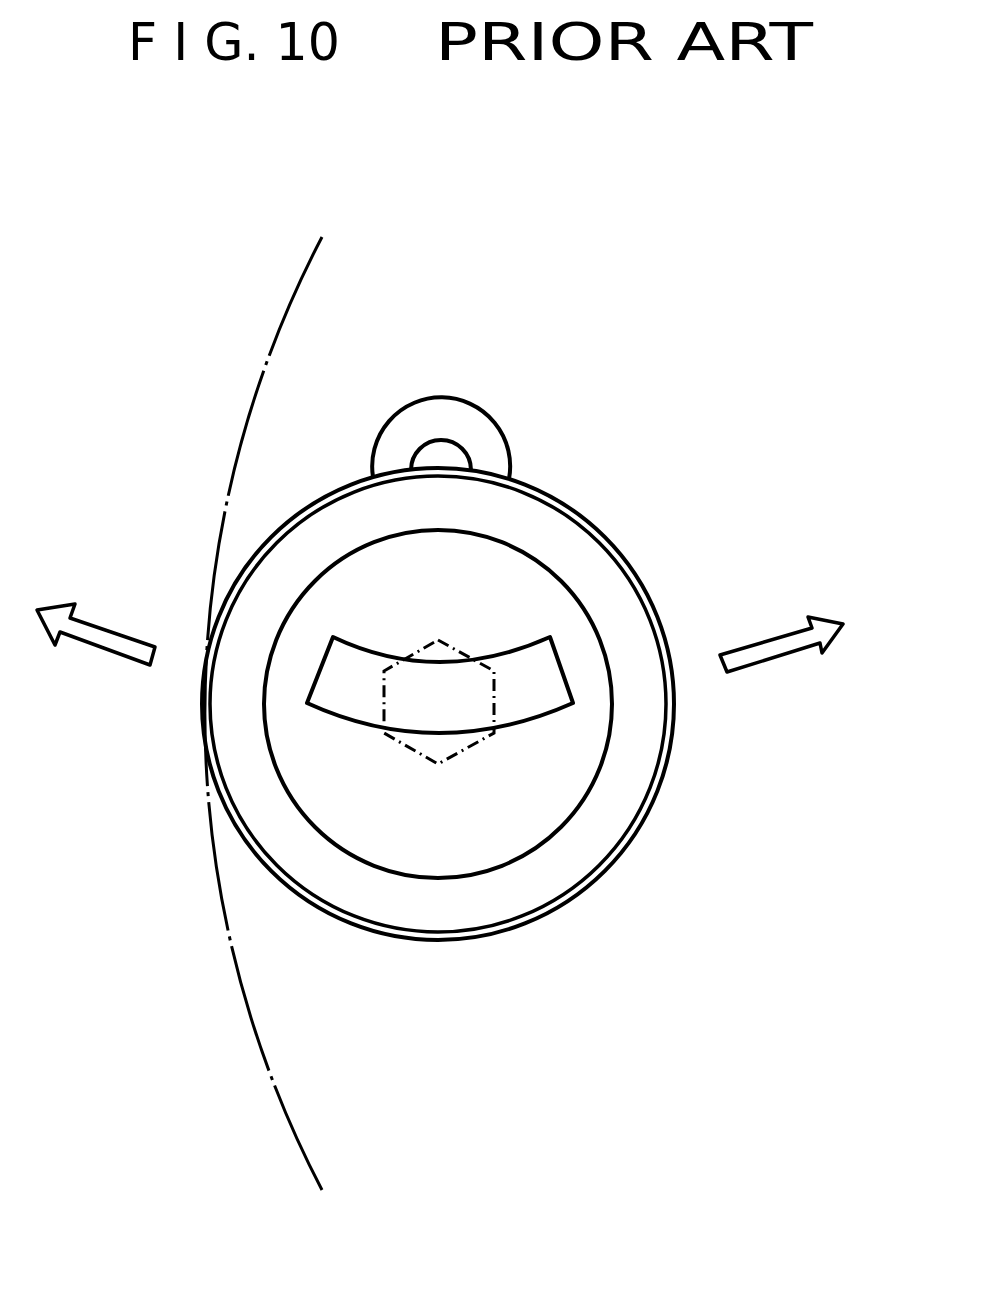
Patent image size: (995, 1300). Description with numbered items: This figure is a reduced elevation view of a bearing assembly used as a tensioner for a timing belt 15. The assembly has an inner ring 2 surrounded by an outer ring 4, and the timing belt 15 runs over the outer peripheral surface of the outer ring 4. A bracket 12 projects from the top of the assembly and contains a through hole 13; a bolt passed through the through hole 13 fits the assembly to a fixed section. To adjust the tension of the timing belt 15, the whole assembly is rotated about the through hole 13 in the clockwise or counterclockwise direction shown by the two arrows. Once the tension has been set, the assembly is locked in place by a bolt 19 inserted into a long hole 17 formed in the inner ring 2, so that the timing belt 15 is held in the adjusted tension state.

The inner ring 2 is at (592, 750).
The outer ring 4 is at (603, 542).
The bracket 12 is at (483, 427).
The through hole 13 is at (437, 450).
The timing belt 15 is at (240, 988).
The long hole 17 is at (552, 664).
The bolt 19 is at (440, 765).